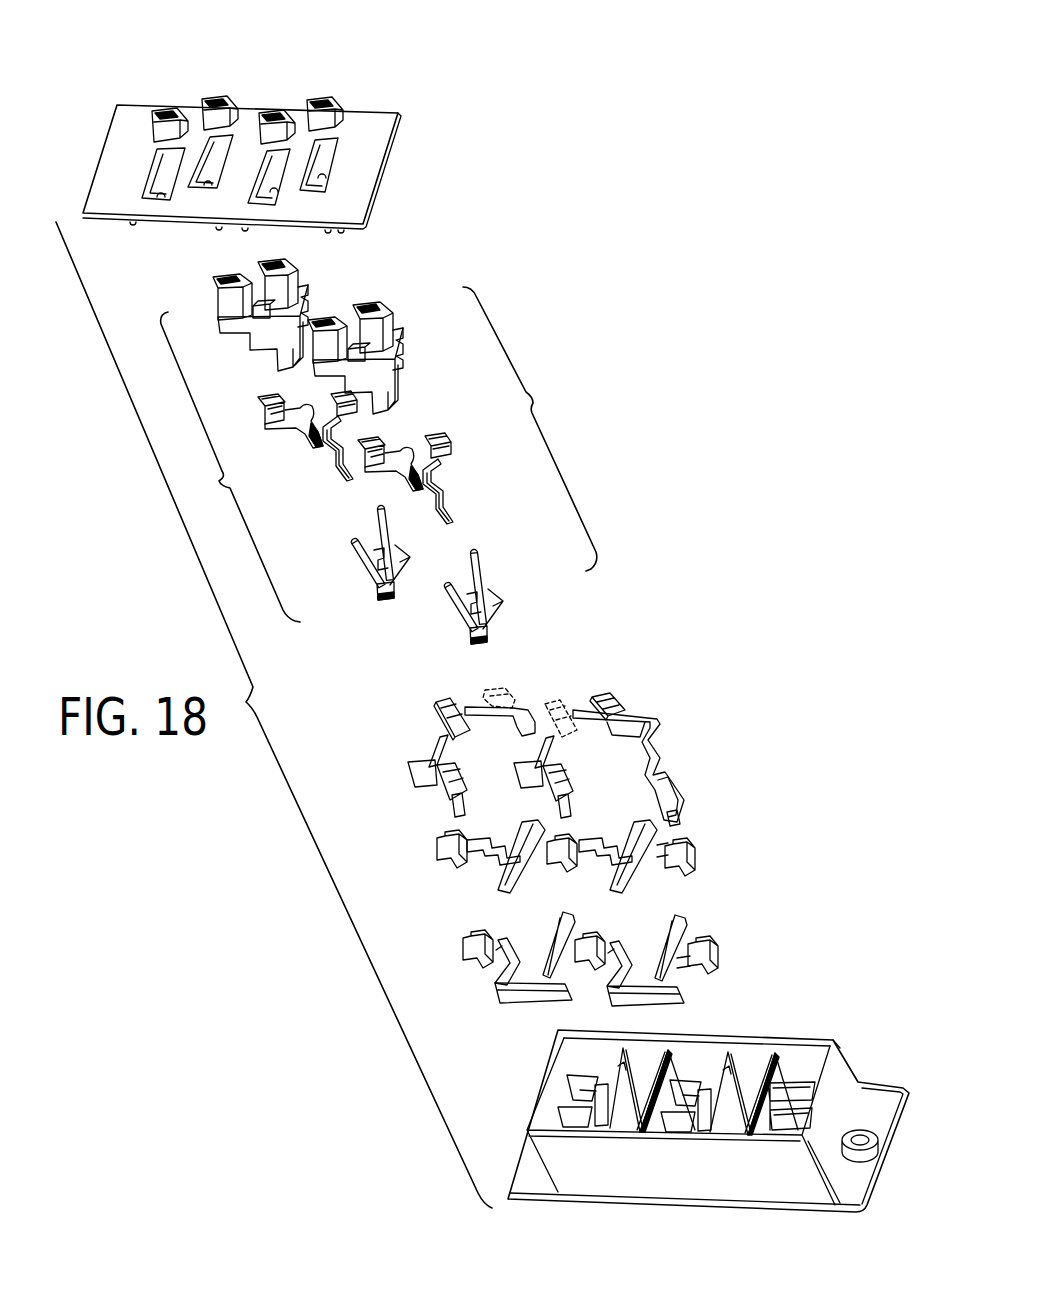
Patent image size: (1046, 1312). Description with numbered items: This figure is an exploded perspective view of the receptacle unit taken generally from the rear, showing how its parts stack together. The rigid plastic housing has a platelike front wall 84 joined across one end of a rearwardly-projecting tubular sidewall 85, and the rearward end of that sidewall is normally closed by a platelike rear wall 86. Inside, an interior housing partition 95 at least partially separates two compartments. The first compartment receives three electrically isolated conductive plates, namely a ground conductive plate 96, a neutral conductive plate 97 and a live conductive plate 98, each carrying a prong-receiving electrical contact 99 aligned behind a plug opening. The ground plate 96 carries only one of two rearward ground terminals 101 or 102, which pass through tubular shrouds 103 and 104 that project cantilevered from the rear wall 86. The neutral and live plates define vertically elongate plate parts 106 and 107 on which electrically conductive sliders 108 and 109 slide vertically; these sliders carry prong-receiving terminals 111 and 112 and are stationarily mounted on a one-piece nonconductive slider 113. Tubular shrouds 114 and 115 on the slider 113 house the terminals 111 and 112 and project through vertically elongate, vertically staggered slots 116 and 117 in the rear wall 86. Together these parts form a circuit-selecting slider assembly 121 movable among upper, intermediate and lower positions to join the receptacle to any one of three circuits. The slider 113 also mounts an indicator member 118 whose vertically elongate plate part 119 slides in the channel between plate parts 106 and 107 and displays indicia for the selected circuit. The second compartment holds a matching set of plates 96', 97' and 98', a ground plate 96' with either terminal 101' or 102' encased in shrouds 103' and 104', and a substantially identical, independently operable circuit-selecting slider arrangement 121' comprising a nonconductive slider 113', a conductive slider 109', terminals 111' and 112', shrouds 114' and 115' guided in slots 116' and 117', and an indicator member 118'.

The front wall 84 is at (875, 1110).
The tubular sidewall 85 is at (837, 1063).
The rear wall 86 is at (372, 158).
The interior housing partition 95 is at (673, 1072).
The ground conductive plate 96 is at (453, 737).
The ground conductive plate 96' is at (625, 754).
The neutral conductive plate 97 is at (484, 873).
The neutral conductive plate 97' is at (621, 865).
The live conductive plate 98 is at (521, 991).
The live conductive plate 98' is at (661, 964).
The prong-receiving electrical contact 99 is at (452, 803).
The ground terminal 101 is at (507, 676).
The ground terminal 101' is at (626, 676).
The ground terminal 102 is at (424, 707).
The ground terminal 102' is at (566, 692).
The tubular shroud 103 is at (221, 78).
The tubular shroud 103' is at (331, 79).
The tubular shroud 104 is at (168, 84).
The tubular shroud 104' is at (278, 85).
The plate part 106 is at (513, 882).
The plate part 107 is at (562, 937).
The conductive slider 108 is at (325, 468).
The conductive slider 109 is at (274, 435).
The conductive slider 109' is at (408, 440).
The prong-receiving terminal 111 is at (322, 392).
The prong-receiving terminal 111' is at (463, 465).
The prong-receiving terminal 112 is at (244, 411).
The prong-receiving terminal 112' is at (355, 480).
The nonconductive slider 113 is at (246, 330).
The nonconductive slider 113' is at (386, 371).
The tubular shroud 114 is at (300, 285).
The tubular shroud 114' is at (400, 317).
The tubular shroud 115 is at (205, 291).
The tubular shroud 115' is at (349, 315).
The vertically elongate slot 116 is at (202, 197).
The vertically elongate slot 116' is at (335, 176).
The vertically elongate slot 117 is at (156, 204).
The vertically elongate slot 117' is at (285, 188).
The indicator member 118 is at (356, 554).
The indicator member 118' is at (502, 596).
The indicator plate part 119 is at (398, 582).
The circuit-selecting slider assembly 121 is at (230, 467).
The circuit-selecting slider arrangement 121' is at (530, 429).